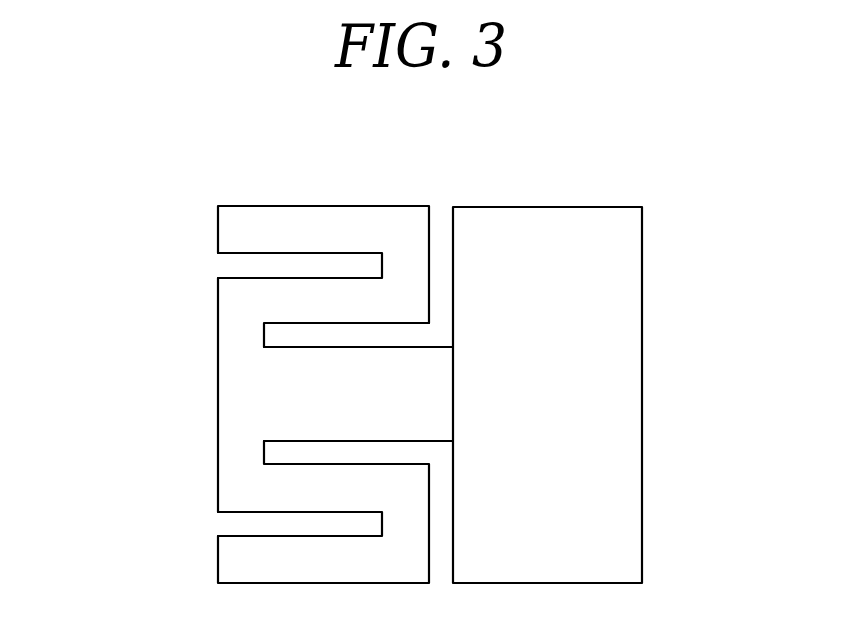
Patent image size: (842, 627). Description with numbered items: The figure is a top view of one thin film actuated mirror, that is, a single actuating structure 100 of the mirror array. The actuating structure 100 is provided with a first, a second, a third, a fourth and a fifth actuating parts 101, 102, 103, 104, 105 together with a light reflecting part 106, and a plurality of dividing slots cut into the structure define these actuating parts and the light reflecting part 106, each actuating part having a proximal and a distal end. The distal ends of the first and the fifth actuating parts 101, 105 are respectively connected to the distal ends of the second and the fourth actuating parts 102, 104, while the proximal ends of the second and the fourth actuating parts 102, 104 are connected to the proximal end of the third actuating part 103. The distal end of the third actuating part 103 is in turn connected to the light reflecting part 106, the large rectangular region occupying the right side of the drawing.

The actuating structure 100 is at (546, 137).
The first actuating part 101 is at (308, 558).
The second actuating part 102 is at (308, 488).
The third actuating part 103 is at (308, 392).
The fourth actuating part 104 is at (308, 306).
The fifth actuating part 105 is at (308, 232).
The light reflecting part 106 is at (573, 367).